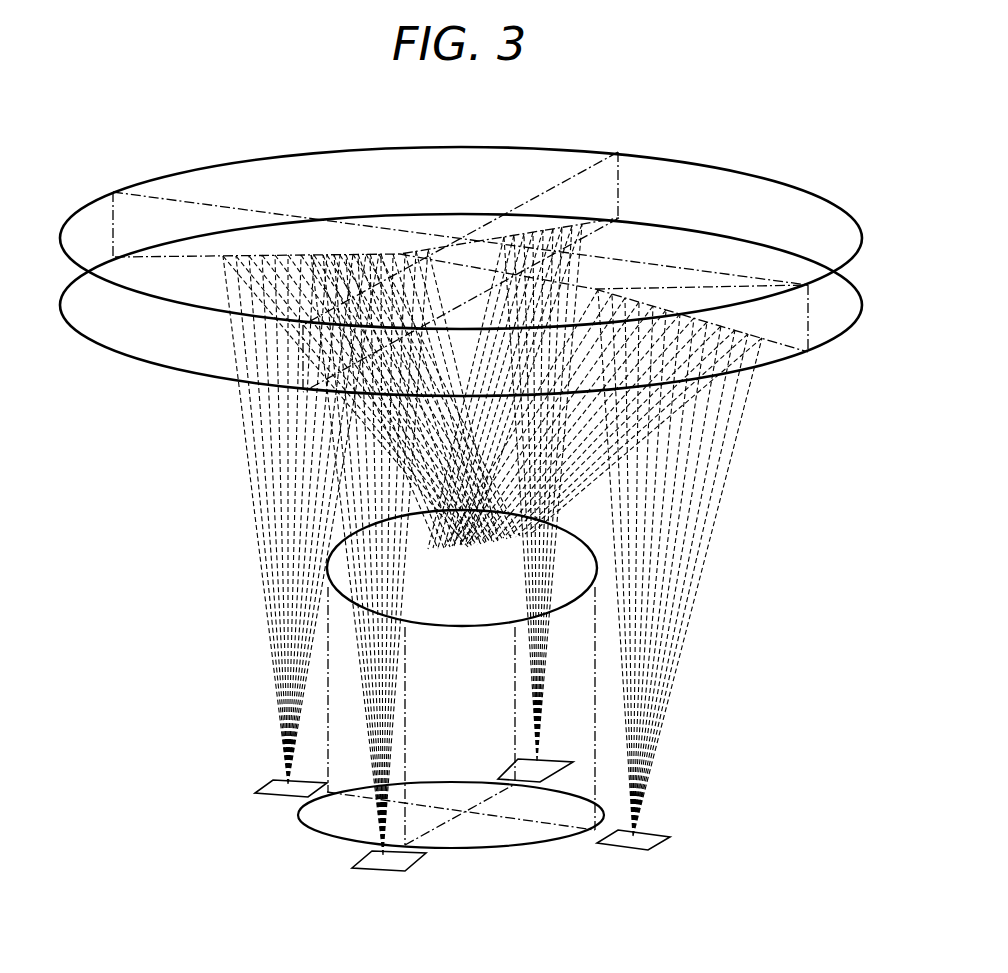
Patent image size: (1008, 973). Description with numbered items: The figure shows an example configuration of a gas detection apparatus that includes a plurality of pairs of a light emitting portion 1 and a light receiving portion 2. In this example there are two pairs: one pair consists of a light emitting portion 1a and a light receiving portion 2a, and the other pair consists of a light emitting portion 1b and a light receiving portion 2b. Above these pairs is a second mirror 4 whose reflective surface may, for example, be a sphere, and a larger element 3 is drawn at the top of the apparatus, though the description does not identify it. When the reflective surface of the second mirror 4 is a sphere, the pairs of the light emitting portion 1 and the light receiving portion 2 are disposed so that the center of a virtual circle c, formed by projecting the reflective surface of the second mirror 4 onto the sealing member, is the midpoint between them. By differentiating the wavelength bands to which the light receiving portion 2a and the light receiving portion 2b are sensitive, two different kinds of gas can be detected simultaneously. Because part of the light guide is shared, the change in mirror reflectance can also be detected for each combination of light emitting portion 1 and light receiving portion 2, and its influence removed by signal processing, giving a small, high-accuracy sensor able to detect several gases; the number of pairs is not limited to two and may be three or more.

The light emitting portion 1 is at (344, 581).
The light emitting portion 1a is at (272, 784).
The light emitting portion 1b is at (370, 866).
The light receiving portion 2 is at (594, 555).
The light receiving portion 2a is at (658, 842).
The light receiving portion 2b is at (510, 772).
The optical element (lens) 3 is at (171, 343).
The second mirror 4 is at (460, 600).
The virtual circle c is at (483, 847).